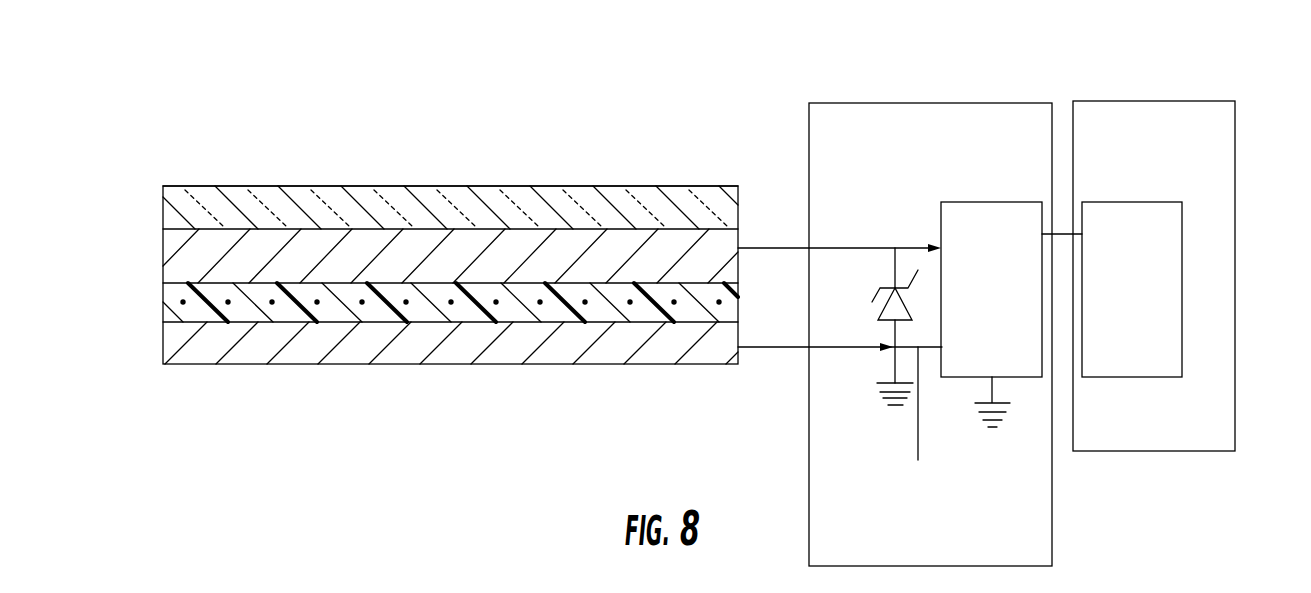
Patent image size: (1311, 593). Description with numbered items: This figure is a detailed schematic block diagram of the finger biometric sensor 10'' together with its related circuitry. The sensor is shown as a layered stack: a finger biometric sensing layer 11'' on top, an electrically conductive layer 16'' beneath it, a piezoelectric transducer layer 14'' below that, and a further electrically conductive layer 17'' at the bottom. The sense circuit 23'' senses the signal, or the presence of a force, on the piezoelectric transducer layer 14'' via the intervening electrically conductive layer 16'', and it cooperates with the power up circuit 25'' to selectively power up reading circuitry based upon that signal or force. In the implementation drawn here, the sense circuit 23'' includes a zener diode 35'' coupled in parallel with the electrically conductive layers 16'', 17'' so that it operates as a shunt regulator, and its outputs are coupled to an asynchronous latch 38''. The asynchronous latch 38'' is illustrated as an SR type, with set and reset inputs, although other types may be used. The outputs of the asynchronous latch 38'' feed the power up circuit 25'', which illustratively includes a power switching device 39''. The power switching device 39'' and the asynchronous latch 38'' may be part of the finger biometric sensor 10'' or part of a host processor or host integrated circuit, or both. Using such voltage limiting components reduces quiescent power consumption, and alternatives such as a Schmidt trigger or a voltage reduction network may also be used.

The finger biometric sensor 10'' is at (401, 216).
The finger biometric sensing layer 11'' is at (420, 189).
The electrically conductive layer 16'' is at (421, 239).
The piezoelectric transducer layer 14'' is at (422, 283).
The electrically conductive layer 17'' is at (425, 333).
The sense circuit 23'' is at (942, 284).
The zener diode 35'' is at (837, 299).
The asynchronous latch 38'' is at (1034, 363).
The power up circuit 25'' is at (1171, 245).
The power switching device 39'' is at (1192, 289).